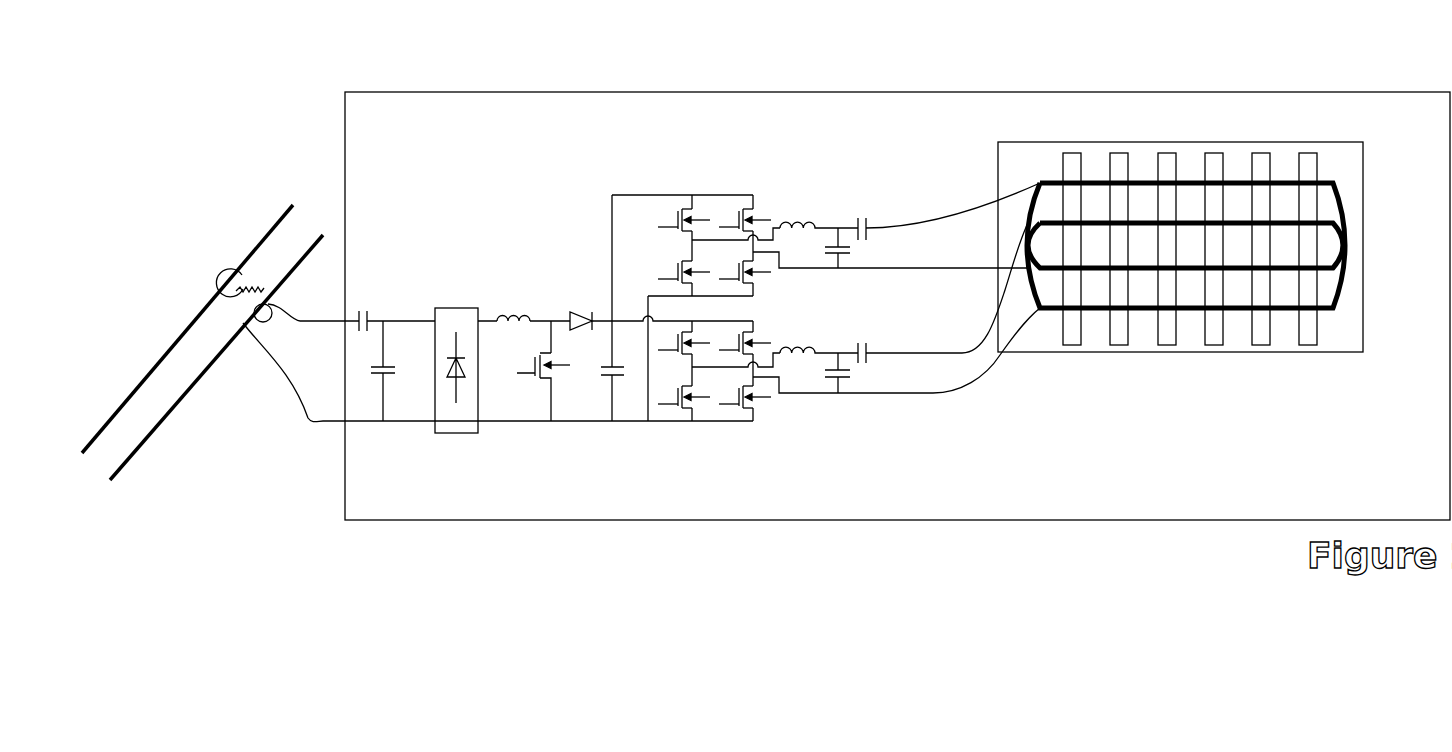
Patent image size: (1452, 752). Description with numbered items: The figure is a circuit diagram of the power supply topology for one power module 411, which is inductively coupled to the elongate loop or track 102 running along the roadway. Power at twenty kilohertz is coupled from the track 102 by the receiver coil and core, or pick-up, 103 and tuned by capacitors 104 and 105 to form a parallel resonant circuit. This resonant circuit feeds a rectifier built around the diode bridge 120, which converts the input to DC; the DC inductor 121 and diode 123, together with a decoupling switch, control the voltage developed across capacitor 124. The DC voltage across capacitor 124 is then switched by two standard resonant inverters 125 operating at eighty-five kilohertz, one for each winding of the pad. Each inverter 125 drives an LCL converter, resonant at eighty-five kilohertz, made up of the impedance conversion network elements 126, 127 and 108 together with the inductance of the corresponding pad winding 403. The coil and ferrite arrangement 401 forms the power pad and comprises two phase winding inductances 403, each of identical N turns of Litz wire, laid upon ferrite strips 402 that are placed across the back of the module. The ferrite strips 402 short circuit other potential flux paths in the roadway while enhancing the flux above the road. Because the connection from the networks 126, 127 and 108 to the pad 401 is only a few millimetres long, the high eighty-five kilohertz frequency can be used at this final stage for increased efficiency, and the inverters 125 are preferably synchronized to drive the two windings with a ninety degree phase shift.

The elongate loop 102 is at (157, 357).
The pick-up 103 is at (220, 272).
The capacitor 104 is at (372, 313).
The capacitor 105 is at (393, 378).
The diode bridge 120 is at (448, 306).
The DC inductor 121 is at (514, 315).
The diode 123 is at (580, 312).
The capacitor 124 is at (605, 380).
The inverter 125 is at (692, 172).
The impedance conversion network element 126 is at (800, 215).
The impedance conversion network element 108 is at (878, 215).
The impedance conversion network element 127 is at (831, 325).
The coil and ferrite arrangement 401 is at (980, 165).
The ferrite strips 402 is at (1072, 160).
The phase winding inductance 403 is at (1345, 200).
The power module 411 is at (809, 78).